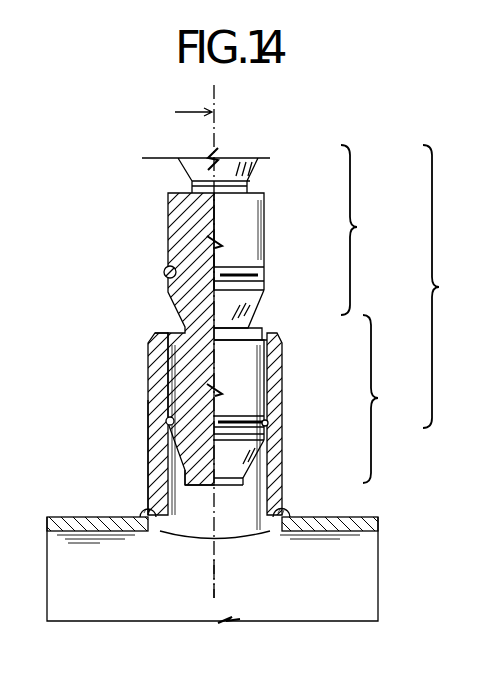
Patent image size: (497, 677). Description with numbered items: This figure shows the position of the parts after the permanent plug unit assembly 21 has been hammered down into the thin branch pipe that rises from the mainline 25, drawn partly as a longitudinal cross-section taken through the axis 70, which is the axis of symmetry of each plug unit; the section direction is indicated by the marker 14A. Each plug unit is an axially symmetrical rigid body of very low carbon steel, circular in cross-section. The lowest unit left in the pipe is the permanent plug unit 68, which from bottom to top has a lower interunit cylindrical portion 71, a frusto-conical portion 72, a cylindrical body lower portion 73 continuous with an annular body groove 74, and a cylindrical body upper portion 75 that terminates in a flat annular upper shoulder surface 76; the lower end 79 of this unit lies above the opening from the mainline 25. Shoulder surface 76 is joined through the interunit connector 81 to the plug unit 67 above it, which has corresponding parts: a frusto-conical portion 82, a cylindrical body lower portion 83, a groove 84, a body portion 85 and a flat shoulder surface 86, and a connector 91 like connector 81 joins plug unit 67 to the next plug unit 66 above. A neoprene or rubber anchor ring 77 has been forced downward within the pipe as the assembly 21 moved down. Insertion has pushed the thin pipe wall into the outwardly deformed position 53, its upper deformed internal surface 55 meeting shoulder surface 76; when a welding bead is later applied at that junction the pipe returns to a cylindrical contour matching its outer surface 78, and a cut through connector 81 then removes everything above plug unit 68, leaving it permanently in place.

The section view designation 14A is at (198, 562).
The multiple plug assembly 21 is at (449, 286).
The mainline 25 is at (345, 524).
The outwardly deformed position of pipe 53 is at (152, 341).
The upper deformed internal pipe surface 55 is at (160, 333).
The plug unit 66 is at (237, 143).
The plug unit 67 is at (364, 230).
The permanent plug unit 68 is at (385, 399).
The axis 70 is at (213, 575).
The lower permanent plug unit interunit cylindrical portion 71 is at (250, 480).
The permanent plug unit frusto-conical portion 72 is at (247, 462).
The cylindrical permanent plug body lower portion 73 is at (250, 436).
The annular plug body groove 74 is at (250, 417).
The cylindrical permanent plug body upper portion 75 is at (247, 365).
The permanent plug unit upper shoulder surface 76 is at (186, 330).
The ring 77 is at (166, 420).
The outer surface 78 is at (149, 478).
The lower end 79 is at (230, 486).
The permanent plug assembly interunit connector 81 is at (248, 334).
The frusto-conical portion 82 is at (258, 311).
The cylindrical permanent plug body lower portion 83 is at (253, 288).
The groove 84 is at (241, 268).
The body portion 85 is at (247, 218).
The flat shoulder surface 86 is at (232, 192).
The permanent plug connector 91 is at (195, 185).